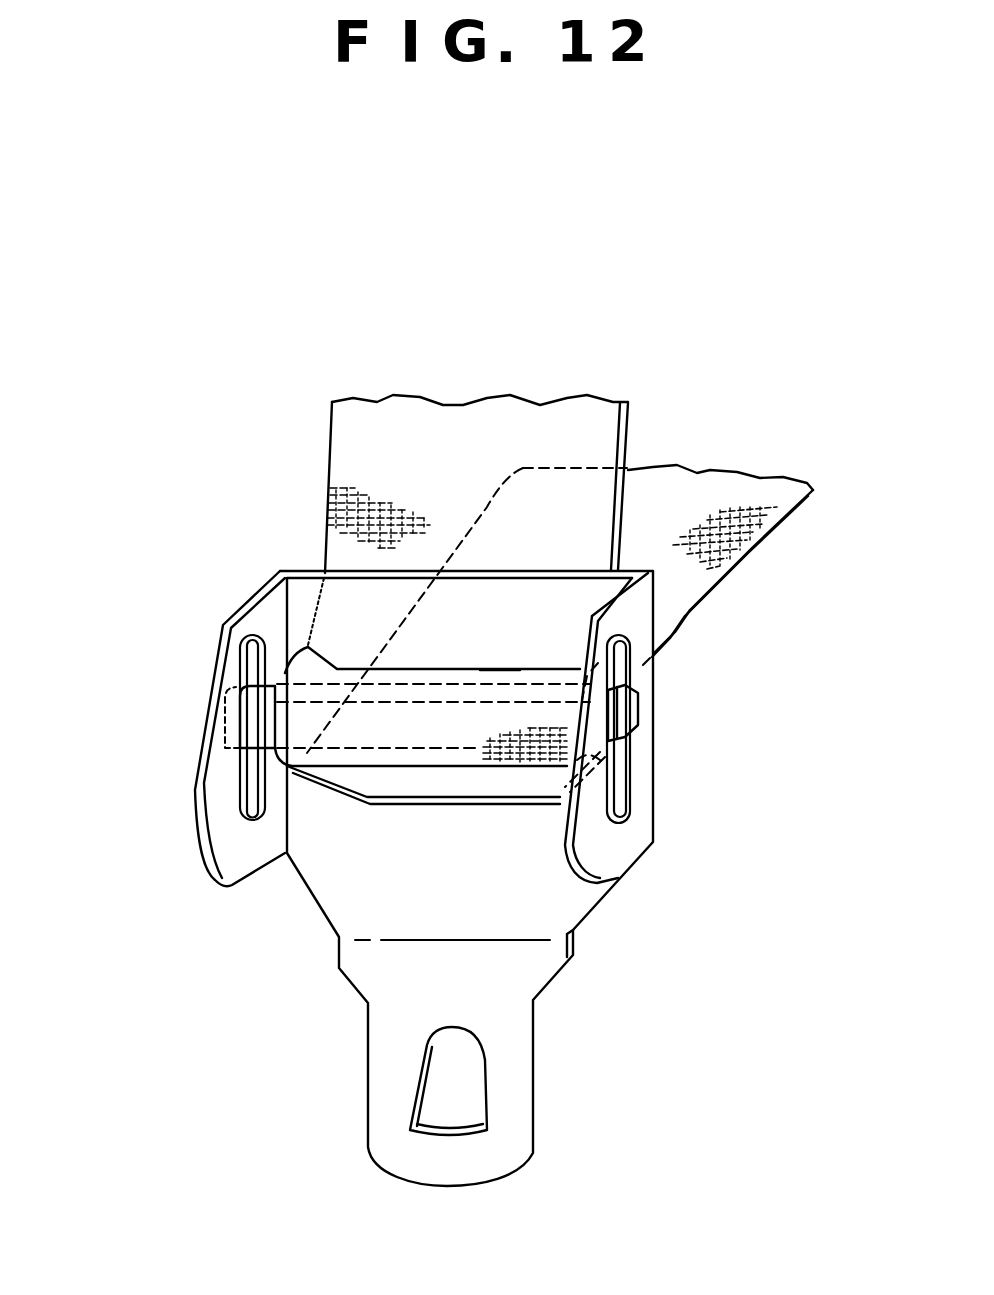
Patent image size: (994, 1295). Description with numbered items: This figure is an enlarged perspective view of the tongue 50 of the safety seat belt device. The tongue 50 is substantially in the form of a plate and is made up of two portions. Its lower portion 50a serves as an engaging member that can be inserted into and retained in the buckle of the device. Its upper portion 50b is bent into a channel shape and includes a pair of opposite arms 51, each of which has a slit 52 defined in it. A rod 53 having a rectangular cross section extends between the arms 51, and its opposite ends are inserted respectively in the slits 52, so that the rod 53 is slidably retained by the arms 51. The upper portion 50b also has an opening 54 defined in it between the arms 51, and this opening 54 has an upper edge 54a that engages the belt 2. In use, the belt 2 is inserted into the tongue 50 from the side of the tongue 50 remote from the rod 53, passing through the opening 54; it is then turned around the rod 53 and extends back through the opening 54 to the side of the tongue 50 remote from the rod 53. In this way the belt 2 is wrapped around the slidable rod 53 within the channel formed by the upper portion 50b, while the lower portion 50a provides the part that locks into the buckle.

The belt 2 is at (690, 497).
The tongue 50 is at (303, 913).
The lower portion 50a is at (510, 1077).
The upper portion 50b is at (300, 587).
The arms 51 is at (248, 605).
The slits 52 is at (233, 810).
The rod 53 is at (252, 724).
The opening 54 is at (533, 797).
The upper edge 54a is at (500, 669).